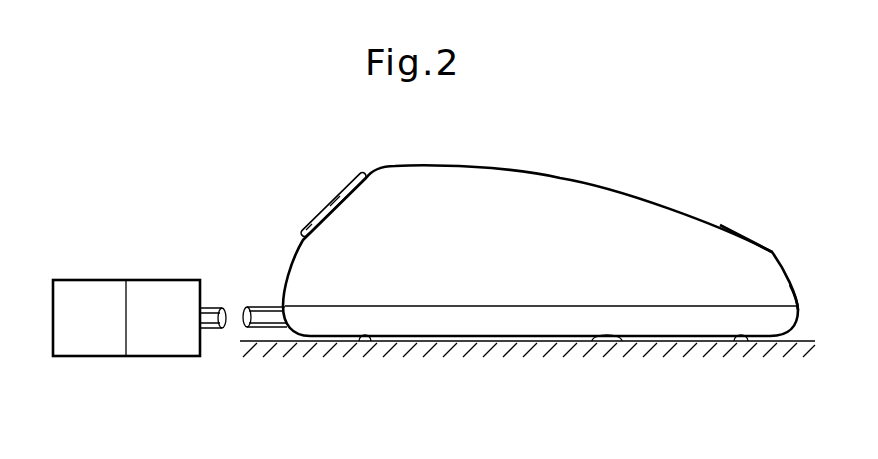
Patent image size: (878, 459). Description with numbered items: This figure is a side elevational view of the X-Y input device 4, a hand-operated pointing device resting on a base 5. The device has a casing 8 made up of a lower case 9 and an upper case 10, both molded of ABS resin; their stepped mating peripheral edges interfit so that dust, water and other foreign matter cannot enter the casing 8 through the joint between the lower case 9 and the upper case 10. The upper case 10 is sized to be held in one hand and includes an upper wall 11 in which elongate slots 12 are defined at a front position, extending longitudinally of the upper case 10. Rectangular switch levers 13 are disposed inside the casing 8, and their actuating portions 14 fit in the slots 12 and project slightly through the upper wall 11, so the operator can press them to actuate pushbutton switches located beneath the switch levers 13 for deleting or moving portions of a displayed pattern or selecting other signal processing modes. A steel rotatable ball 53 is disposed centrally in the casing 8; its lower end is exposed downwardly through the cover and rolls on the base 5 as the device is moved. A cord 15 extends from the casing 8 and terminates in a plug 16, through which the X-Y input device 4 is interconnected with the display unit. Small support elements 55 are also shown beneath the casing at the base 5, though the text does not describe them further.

The X-Y input device 4 is at (334, 190).
The base 5 is at (280, 343).
The casing 8 is at (822, 238).
The lower case 9 is at (778, 313).
The upper case 10 is at (758, 256).
The upper wall 11 is at (368, 177).
The elongate slots 12 is at (308, 240).
The switch levers 13 is at (328, 204).
The actuating portions 14 is at (308, 227).
The cord 15 is at (267, 306).
The plug 16 is at (124, 283).
The rotatable ball 53 is at (612, 342).
The support rollers 55 is at (370, 342).